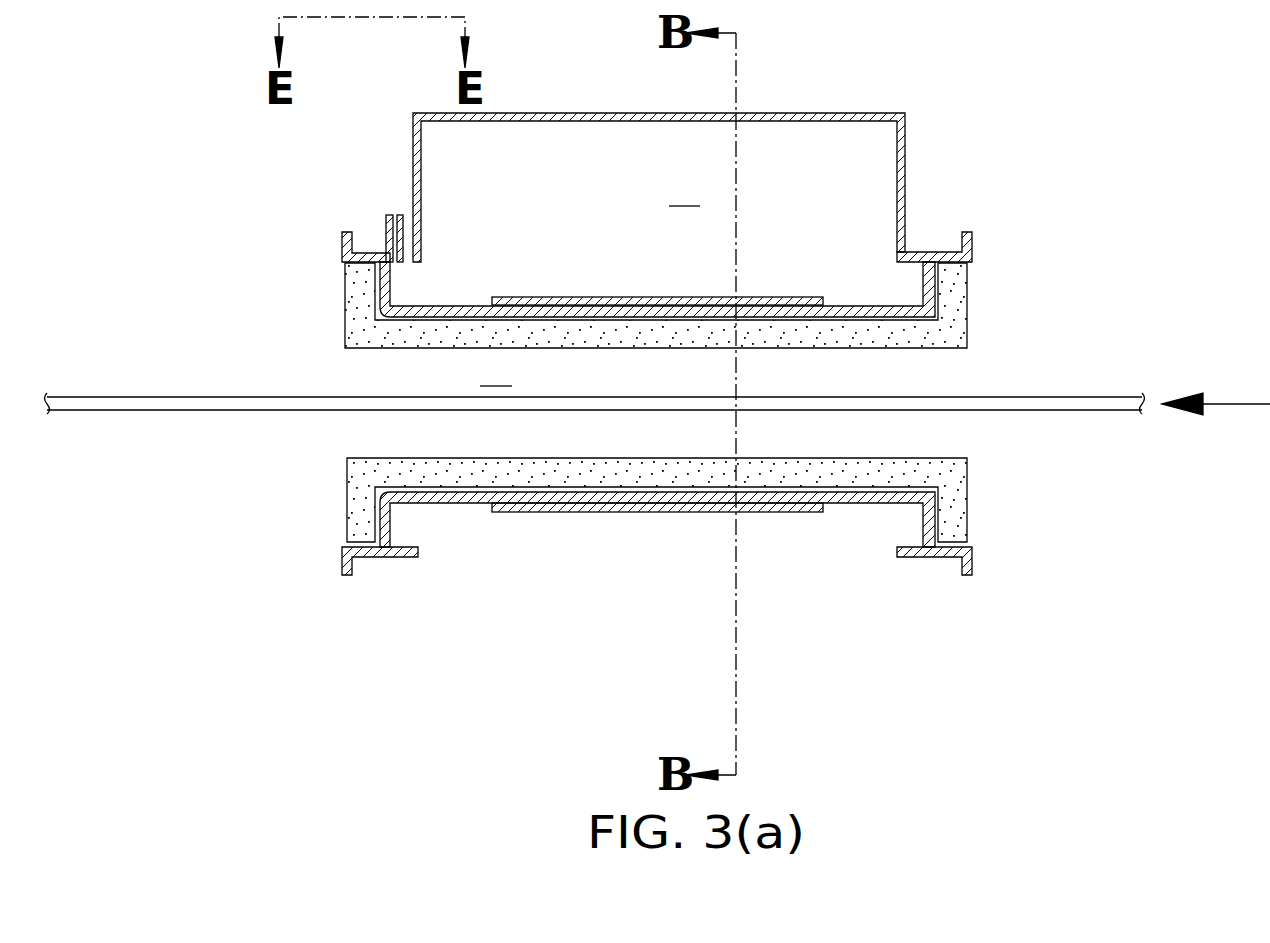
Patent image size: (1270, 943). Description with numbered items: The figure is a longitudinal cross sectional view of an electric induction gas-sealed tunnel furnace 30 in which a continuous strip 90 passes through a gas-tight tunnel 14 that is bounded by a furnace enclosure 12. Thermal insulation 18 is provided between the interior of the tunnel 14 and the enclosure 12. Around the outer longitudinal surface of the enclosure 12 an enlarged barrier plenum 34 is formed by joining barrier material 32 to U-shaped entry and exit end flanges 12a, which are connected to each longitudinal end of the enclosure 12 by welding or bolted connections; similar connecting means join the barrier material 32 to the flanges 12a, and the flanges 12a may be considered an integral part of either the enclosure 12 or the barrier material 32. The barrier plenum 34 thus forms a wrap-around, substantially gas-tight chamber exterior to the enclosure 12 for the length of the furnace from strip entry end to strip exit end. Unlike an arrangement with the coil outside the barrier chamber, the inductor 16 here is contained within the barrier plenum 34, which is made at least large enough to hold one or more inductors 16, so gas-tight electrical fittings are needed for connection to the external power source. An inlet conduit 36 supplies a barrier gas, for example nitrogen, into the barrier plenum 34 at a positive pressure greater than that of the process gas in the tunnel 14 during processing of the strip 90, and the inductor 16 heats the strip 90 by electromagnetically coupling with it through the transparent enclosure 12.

The furnace enclosure 12 is at (445, 308).
The entry and exit end flanges 12a is at (412, 250).
The gas-tight tunnel 14 is at (496, 374).
The inductor 16 is at (553, 300).
The thermal insulation 18 is at (353, 307).
The electric induction gas-sealed tunnel furnace 30 is at (893, 80).
The barrier material 32 is at (902, 154).
The barrier plenum 34 is at (685, 194).
The inlet conduit 36 is at (384, 234).
The strip 90 is at (132, 407).